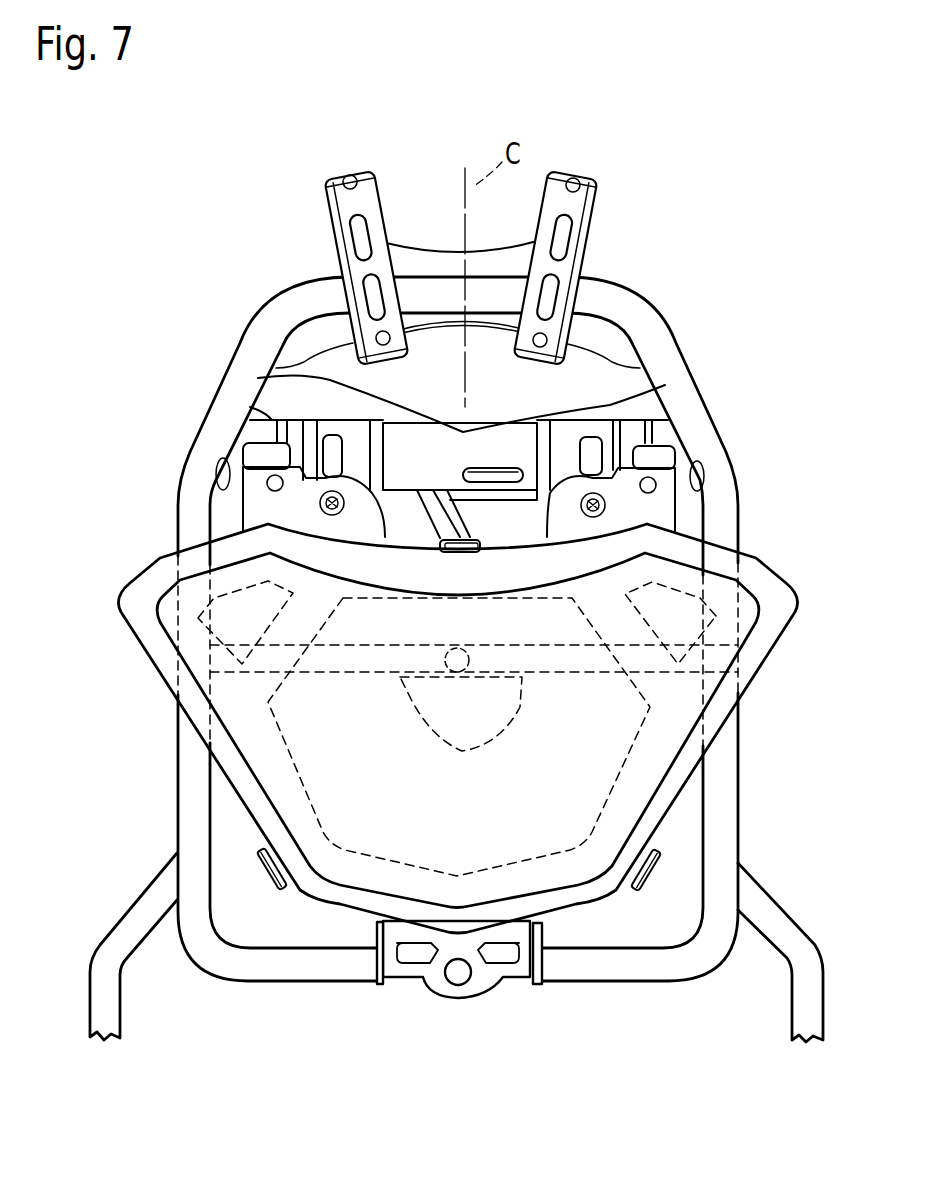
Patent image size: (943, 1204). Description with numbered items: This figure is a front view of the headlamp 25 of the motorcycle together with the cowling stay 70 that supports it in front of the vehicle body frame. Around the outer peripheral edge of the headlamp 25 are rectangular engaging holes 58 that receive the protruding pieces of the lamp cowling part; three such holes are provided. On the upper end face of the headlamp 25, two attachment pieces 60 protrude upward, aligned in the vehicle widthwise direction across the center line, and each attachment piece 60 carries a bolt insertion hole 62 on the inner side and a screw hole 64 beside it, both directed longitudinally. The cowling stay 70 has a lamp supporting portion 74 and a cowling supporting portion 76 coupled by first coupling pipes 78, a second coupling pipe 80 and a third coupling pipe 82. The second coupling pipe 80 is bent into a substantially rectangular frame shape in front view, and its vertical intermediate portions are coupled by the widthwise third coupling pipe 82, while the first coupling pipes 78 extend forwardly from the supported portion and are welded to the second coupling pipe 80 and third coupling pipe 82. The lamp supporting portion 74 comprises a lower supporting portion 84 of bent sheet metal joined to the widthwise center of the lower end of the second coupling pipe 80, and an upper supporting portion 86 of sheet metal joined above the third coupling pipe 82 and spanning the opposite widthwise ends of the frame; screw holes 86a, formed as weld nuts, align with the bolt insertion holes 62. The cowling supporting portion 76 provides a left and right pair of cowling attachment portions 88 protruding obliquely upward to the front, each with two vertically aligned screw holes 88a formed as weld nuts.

The headlamp 25 is at (792, 580).
The engaging hole 58 is at (468, 540).
The attachment piece 60 is at (262, 510).
The bolt insertion hole 62 is at (328, 497).
The screw hole 64 is at (268, 485).
The cowling stay 70 is at (177, 466).
The lamp supporting portion 74 is at (367, 660).
The cowling supporting portion 76 is at (412, 238).
The first coupling pipe 78 is at (625, 737).
The second coupling pipe 80 is at (177, 778).
The third coupling pipe 82 is at (700, 700).
The lower supporting portion 84 is at (500, 982).
The upper supporting portion 86 is at (400, 432).
The screw hole 86a is at (320, 506).
The cowling attachment portion 88 is at (330, 203).
The screw hole 88a is at (348, 180).